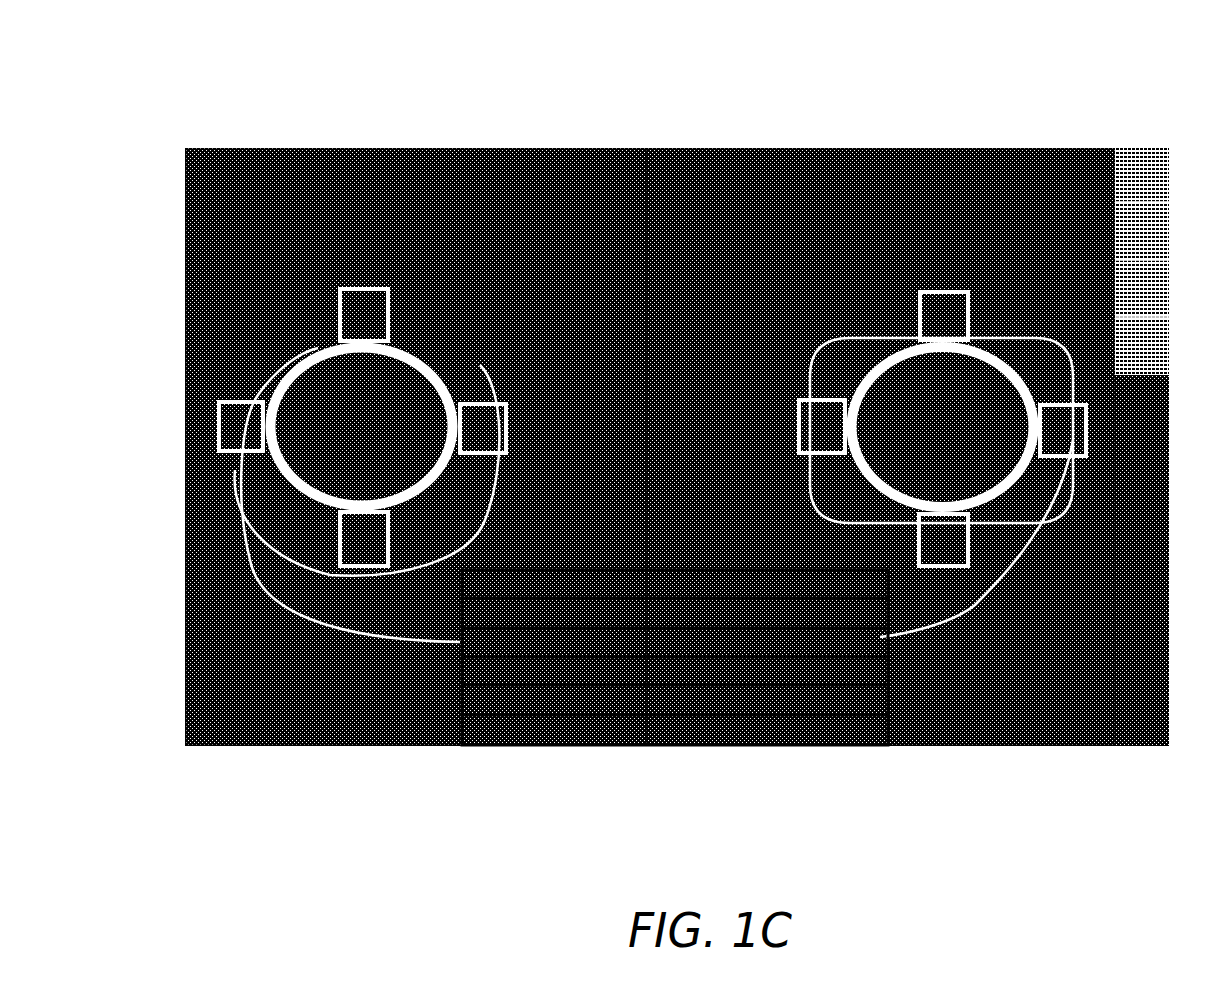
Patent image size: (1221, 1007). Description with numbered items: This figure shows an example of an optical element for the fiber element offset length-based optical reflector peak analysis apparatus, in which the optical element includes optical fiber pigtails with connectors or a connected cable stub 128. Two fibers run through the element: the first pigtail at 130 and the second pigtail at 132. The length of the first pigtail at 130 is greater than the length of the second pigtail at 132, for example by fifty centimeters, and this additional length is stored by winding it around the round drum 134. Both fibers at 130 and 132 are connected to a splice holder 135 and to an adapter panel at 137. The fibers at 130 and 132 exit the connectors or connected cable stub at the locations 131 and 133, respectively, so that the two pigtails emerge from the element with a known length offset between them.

The optical fiber pigtails with connectors or connected cable stub 128 is at (652, 453).
The pigtail 1 130 is at (968, 605).
The fiber exit location 131 is at (242, 148).
The pigtail 2 132 is at (967, 693).
The fiber exit location 133 is at (1055, 148).
The round drum 134 is at (313, 353).
The splice holder 135 is at (540, 732).
The adapter panel 137 is at (1140, 148).